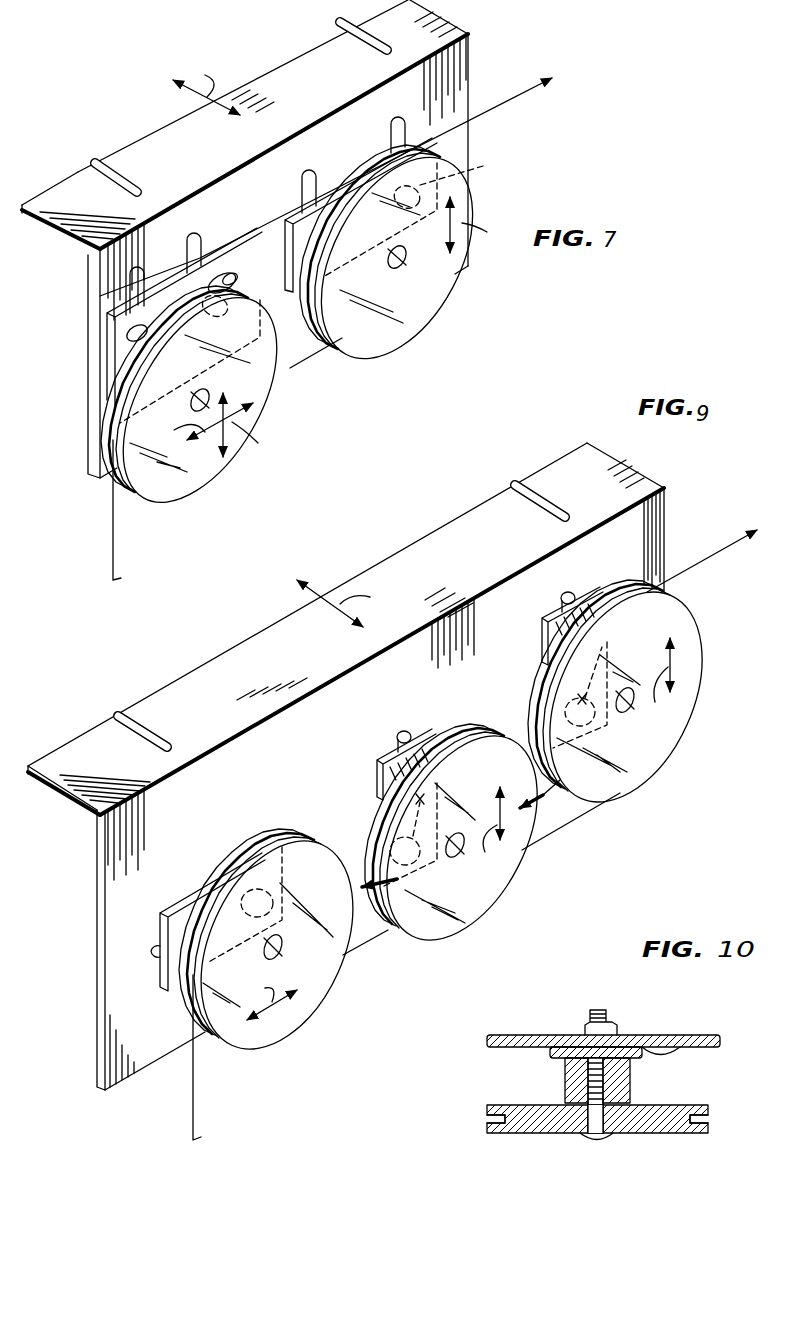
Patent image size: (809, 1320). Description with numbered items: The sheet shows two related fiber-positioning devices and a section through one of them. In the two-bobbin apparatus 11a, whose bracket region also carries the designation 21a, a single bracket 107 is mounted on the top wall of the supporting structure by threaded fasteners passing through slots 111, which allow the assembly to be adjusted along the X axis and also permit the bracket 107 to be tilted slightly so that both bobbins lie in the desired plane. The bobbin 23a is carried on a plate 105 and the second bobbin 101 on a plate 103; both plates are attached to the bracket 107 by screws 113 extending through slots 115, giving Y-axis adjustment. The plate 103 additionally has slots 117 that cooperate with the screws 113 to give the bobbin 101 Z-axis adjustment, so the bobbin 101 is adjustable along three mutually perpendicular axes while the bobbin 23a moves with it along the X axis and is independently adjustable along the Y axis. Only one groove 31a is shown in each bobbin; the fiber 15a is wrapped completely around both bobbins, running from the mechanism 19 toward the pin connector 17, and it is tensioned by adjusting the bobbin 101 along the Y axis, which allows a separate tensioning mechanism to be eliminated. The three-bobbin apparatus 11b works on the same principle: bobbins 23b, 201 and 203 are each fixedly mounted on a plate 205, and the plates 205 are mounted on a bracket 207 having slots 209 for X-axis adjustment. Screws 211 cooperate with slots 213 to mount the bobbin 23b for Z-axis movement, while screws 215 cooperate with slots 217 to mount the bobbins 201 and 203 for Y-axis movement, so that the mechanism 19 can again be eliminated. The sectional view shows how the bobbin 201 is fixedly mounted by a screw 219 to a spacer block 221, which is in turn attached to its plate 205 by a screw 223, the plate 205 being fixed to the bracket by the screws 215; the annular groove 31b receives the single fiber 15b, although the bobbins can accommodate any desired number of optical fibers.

In FIG. 7, the apparatus 11a is at (250, 47).
In FIG. 9, the pulley assembly 11b is at (443, 510).
In FIG. 7, the angle bracket 21a is at (166, 104).
In FIG. 7, the bracket 107 is at (57, 197).
In FIG. 7, the slots 111 is at (340, 24).
In FIG. 7, the slots 115 is at (135, 265).
In FIG. 7, the plate 105 is at (297, 217).
In FIG. 7, the plate 103 is at (128, 325).
In FIG. 7, the slots 117 is at (228, 276).
In FIG. 7, the screws 113 is at (100, 293).
In FIG. 7, the groove 31a is at (178, 285).
In FIG. 7, the second bobbin 101 is at (205, 478).
In FIG. 7, the bobbin 23a is at (420, 313).
In FIG. 7, the fiber 15a is at (113, 525).
In FIG. 7, the pin connector 17 is at (658, 67).
In FIG. 9, the pin connector 17 is at (717, 504).
In FIG. 7, the mechanism 19 is at (211, 561).
In FIG. 9, the mechanism 19 is at (116, 1142).
In FIG. 9, the bracket 207 is at (217, 685).
In FIG. 10, the bracket 207 is at (540, 1000).
In FIG. 9, the slots 209 is at (517, 490).
In FIG. 9, the plate 205 is at (173, 912).
In FIG. 10, the plate 205 is at (663, 1053).
In FIG. 9, the screws 211 is at (265, 836).
In FIG. 9, the slots 213 is at (150, 950).
In FIG. 9, the slots 217 is at (399, 730).
In FIG. 9, the screws 215 is at (443, 780).
In FIG. 10, the screws 215 is at (577, 1027).
In FIG. 9, the bobbin 23b is at (293, 1013).
In FIG. 9, the bobbin 201 is at (417, 937).
In FIG. 10, the bobbin 201 is at (670, 1110).
In FIG. 9, the bobbin 203 is at (673, 730).
In FIG. 9, the fiber 15b is at (197, 1080).
In FIG. 10, the screw 223 is at (620, 1045).
In FIG. 10, the spacer block 221 is at (565, 1083).
In FIG. 10, the annular groove 31b is at (702, 1120).
In FIG. 10, the screw 219 is at (608, 1138).